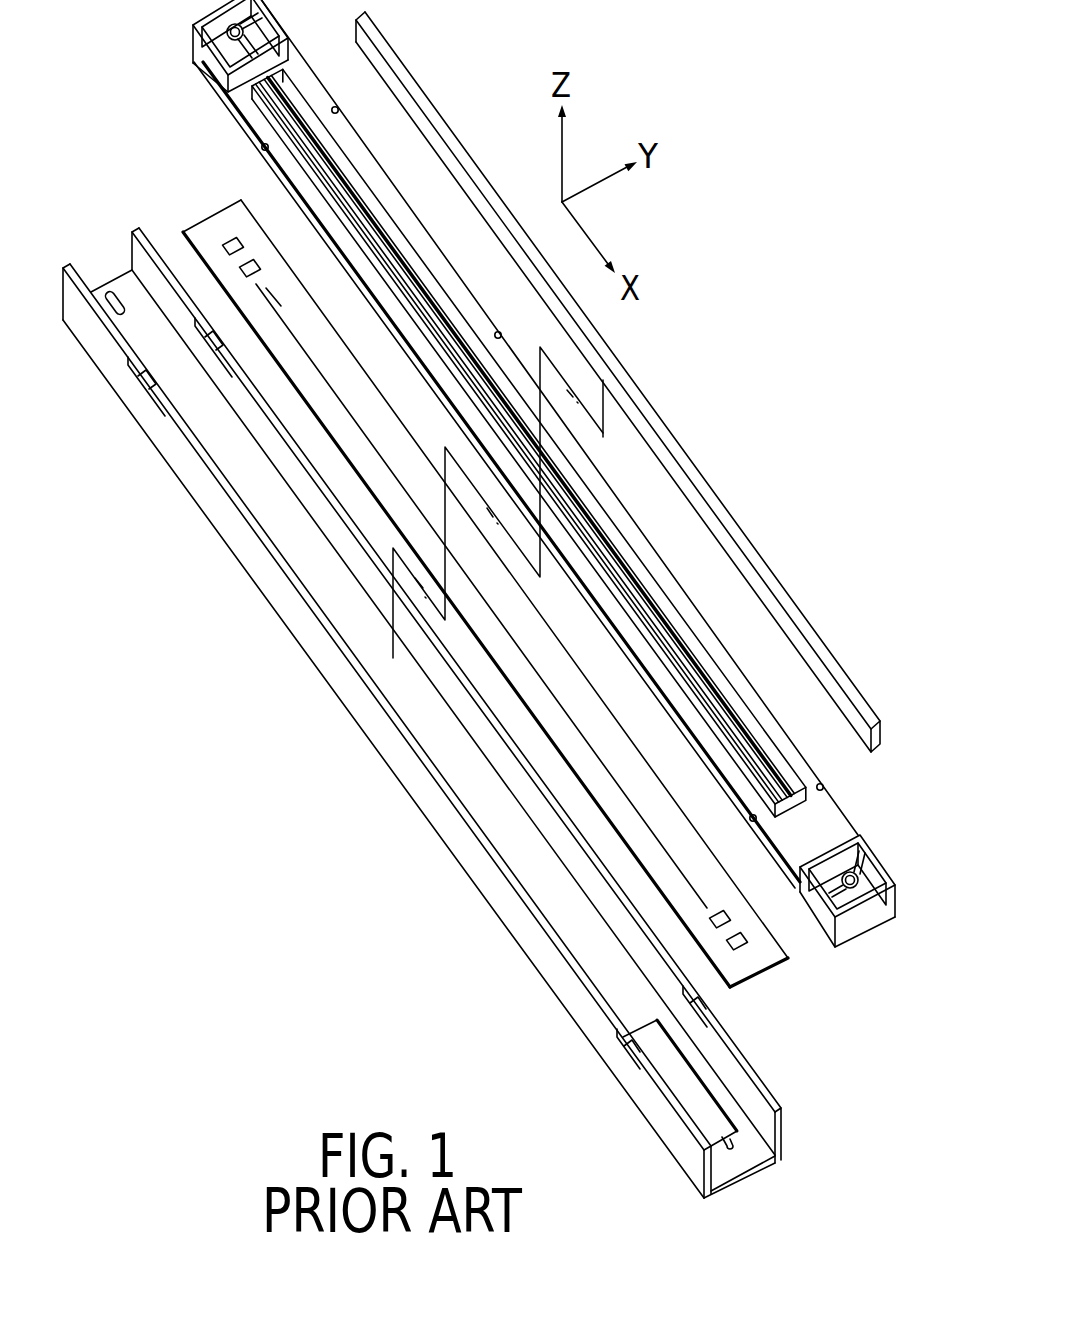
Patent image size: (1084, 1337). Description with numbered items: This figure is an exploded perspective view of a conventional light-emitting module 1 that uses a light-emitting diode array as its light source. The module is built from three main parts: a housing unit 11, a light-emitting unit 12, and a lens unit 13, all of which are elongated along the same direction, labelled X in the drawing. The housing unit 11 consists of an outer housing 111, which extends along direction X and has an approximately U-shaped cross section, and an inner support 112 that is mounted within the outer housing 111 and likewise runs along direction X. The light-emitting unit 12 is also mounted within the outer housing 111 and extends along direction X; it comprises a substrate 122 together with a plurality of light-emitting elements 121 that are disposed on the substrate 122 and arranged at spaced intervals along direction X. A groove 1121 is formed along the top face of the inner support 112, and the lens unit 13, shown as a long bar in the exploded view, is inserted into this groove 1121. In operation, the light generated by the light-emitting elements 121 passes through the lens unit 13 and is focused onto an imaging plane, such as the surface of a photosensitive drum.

The light-emitting module 1 is at (198, 148).
The housing unit 11 is at (424, 826).
The outer housing 111 is at (313, 655).
The inner support 112 is at (827, 820).
The groove 1121 is at (787, 770).
The light-emitting unit 12 is at (299, 416).
The light-emitting elements 121 is at (232, 240).
The substrate 122 is at (242, 218).
The lens unit 13 is at (652, 375).